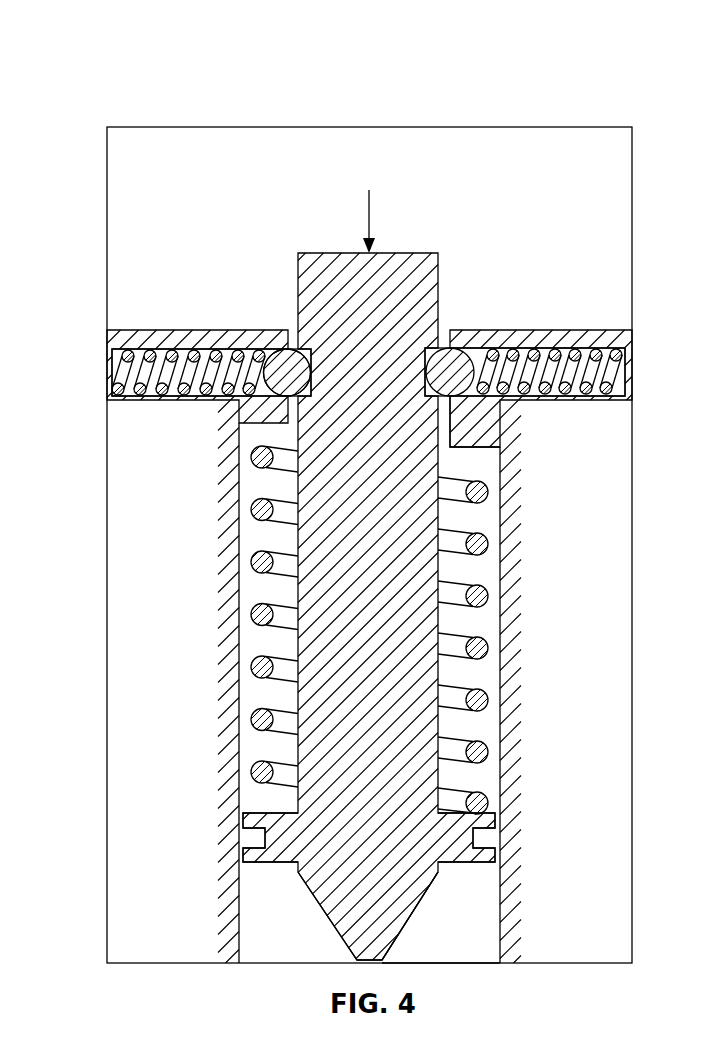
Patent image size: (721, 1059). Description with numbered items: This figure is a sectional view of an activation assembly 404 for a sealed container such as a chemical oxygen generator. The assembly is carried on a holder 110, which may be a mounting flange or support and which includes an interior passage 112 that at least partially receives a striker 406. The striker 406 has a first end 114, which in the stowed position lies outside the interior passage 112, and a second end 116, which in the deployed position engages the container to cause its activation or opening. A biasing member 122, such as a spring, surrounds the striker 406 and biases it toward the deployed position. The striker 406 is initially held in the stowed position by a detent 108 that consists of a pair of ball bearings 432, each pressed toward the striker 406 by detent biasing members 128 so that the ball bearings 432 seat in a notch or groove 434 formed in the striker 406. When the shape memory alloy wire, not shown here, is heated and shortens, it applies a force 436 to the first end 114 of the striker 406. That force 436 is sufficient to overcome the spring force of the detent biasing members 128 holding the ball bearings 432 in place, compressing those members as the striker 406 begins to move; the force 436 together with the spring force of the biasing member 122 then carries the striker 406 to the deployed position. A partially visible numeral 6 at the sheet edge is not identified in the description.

The wire drive assembly 404 is at (88, 146).
The partially visible numeral 6 is at (6, 385).
The housing 110 is at (565, 787).
The lower cavity of housing 112 is at (474, 880).
The plunger pin 114 is at (331, 253).
The conical tip of plunger 116 is at (374, 957).
The coil spring 122 is at (256, 667).
The detent springs 128 is at (196, 346).
The detent ball 108 is at (287, 372).
The detent balls 432 is at (452, 372).
The shoulder of housing 434 is at (453, 400).
The wire force arrow 436 is at (367, 215).
The plunger flange 406 is at (342, 823).